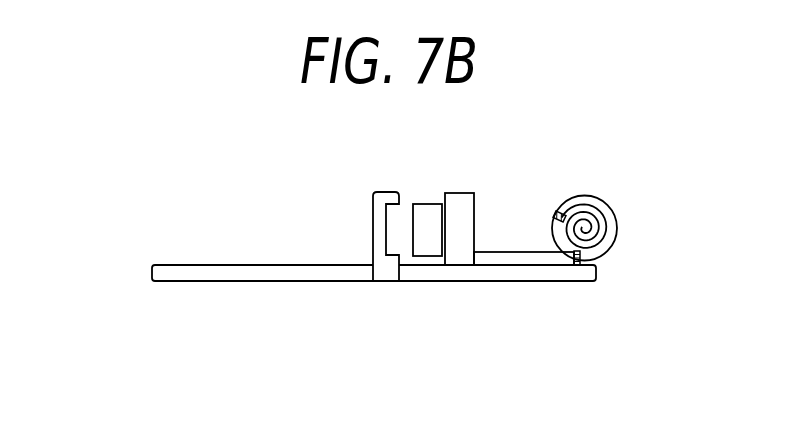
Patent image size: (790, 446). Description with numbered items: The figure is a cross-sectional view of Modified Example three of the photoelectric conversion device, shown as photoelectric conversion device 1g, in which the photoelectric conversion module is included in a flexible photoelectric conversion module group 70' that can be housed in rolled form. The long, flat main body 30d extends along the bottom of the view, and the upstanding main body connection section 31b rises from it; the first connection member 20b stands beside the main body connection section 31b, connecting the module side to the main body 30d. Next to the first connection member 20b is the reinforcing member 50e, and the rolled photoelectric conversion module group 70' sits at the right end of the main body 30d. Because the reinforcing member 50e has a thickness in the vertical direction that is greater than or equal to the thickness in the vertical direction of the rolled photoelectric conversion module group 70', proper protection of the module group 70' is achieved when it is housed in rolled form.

The photoelectric conversion device 1g is at (273, 231).
The main body 30d is at (256, 281).
The main body connection section 31b is at (386, 245).
The first connection member 20b is at (421, 203).
The reinforcing member 50e is at (461, 192).
The flexible photoelectric conversion module group 70' is at (619, 222).